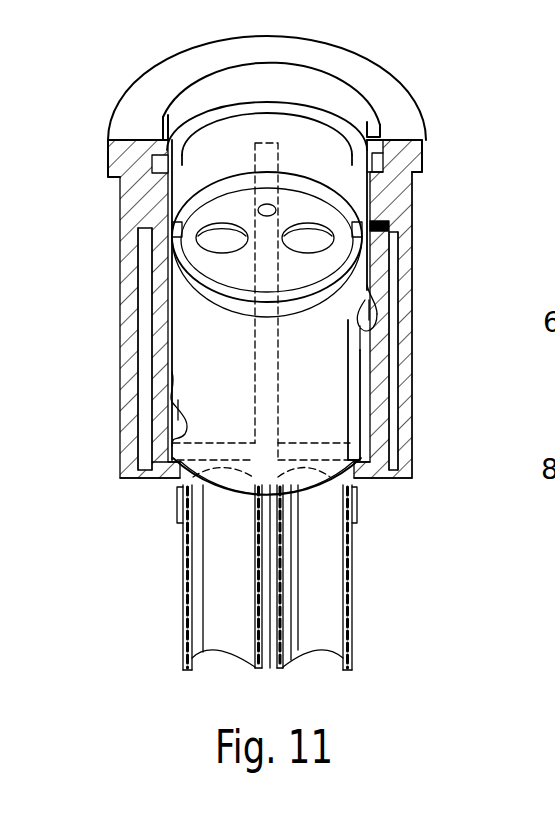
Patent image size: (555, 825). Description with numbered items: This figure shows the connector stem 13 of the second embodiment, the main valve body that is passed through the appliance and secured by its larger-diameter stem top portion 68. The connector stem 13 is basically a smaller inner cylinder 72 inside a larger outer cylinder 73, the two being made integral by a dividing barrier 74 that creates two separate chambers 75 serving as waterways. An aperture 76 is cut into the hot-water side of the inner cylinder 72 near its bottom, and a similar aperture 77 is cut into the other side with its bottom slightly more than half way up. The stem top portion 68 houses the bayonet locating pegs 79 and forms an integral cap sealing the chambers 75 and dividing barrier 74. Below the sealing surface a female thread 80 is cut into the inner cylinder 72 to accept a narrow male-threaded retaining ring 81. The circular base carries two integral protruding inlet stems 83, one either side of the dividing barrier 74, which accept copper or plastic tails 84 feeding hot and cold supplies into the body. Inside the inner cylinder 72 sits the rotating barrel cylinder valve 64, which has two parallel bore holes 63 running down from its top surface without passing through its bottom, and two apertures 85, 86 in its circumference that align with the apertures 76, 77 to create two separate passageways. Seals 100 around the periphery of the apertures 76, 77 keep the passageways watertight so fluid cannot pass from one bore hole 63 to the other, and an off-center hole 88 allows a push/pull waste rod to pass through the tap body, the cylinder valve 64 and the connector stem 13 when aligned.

The connector stem 13 is at (425, 461).
The holes 63 is at (308, 240).
The cylinder valve 64 is at (188, 338).
The stem top portion 68 is at (124, 110).
The inner cylinder 72 is at (380, 372).
The outer cylinder 73 is at (119, 226).
The dividing barrier 74 is at (296, 430).
The chambers 75 is at (137, 488).
The aperture 76 is at (158, 398).
The aperture 77 is at (385, 296).
The bayonet locating pegs 79 is at (383, 134).
The female thread 80 is at (389, 229).
The retaining ring 81 is at (355, 215).
The inlet stems 83 is at (178, 514).
The tails 84 is at (307, 638).
The aperture 85 is at (160, 428).
The aperture 86 is at (385, 350).
The hole 88 is at (270, 207).
The seals 100 is at (385, 322).